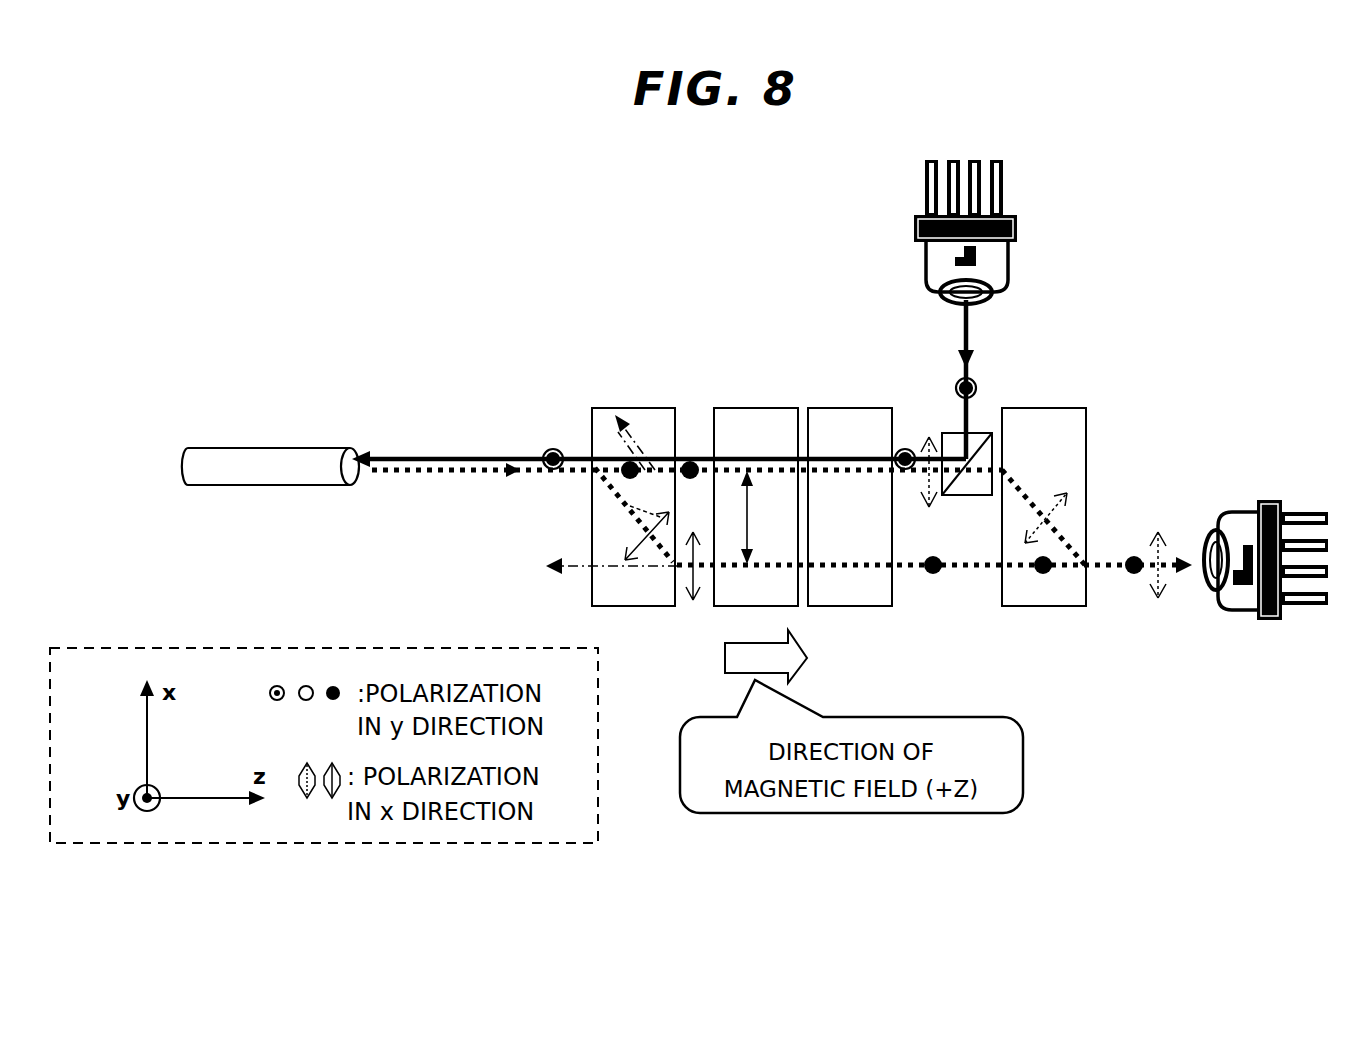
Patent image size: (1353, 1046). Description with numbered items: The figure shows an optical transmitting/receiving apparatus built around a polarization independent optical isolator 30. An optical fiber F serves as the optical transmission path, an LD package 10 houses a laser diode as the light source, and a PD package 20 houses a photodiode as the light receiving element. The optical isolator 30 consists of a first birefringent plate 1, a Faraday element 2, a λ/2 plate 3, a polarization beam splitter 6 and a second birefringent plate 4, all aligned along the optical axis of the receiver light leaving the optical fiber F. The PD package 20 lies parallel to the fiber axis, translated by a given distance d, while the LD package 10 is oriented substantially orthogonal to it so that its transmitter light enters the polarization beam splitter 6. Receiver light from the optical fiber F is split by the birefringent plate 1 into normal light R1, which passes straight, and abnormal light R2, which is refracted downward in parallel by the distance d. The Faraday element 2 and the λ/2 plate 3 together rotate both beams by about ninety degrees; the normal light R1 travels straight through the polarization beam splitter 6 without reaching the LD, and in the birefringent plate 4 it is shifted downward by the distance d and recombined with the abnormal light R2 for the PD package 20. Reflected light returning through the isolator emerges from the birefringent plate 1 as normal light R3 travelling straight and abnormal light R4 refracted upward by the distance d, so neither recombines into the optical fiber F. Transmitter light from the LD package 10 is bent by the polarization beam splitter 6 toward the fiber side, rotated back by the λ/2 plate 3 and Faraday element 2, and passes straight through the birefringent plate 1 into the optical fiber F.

The optical fiber F is at (286, 452).
The LD package 10 is at (1010, 228).
The PD package 20 is at (1270, 500).
The polarization independent optical isolator 30 is at (700, 304).
The first birefringent plate 1 is at (655, 410).
The Faraday element 2 is at (735, 410).
The λ/2 plate 3 is at (833, 410).
The second birefringent plate 4 is at (1077, 440).
The polarization beam splitter 6 is at (944, 440).
The distance d is at (757, 517).
The normal light R1 is at (847, 470).
The abnormal light R2 is at (845, 567).
The normal light R3 is at (568, 563).
The abnormal light R4 is at (618, 412).